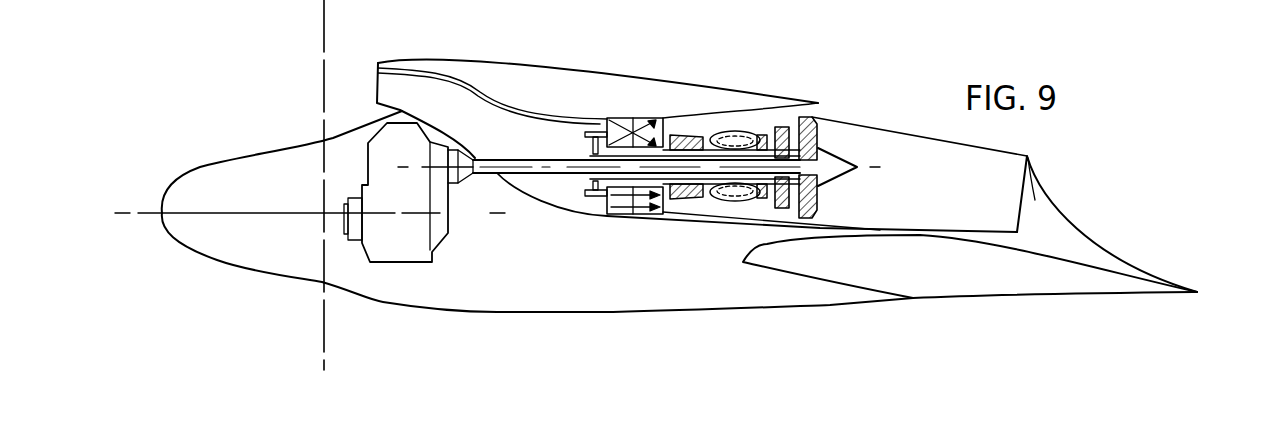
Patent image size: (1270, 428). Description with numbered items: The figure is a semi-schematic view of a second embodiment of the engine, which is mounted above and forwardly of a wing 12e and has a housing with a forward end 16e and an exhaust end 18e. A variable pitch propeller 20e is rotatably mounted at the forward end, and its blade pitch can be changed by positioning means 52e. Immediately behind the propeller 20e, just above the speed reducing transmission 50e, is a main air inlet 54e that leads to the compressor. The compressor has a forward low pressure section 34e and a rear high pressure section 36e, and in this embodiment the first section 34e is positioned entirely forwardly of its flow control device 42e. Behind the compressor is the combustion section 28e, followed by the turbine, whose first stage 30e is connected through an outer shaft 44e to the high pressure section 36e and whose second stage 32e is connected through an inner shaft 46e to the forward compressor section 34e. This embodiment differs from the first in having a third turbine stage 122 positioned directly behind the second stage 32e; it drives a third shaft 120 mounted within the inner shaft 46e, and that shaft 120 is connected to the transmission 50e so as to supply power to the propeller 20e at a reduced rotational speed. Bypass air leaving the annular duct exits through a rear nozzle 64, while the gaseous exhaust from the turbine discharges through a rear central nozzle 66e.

The wing 12e is at (987, 290).
The forward end 16e is at (378, 297).
The exhaust end 18e is at (1050, 217).
The variable pitch propeller 20e is at (323, 48).
The combustion section 28e is at (723, 137).
The turbine first stage 30e is at (762, 137).
The turbine second stage 32e is at (780, 132).
The forward low pressure compressor section 34e is at (580, 183).
The rear high pressure compressor section 36e is at (680, 196).
The flow control device 42e is at (617, 118).
The outer shaft 44e is at (717, 182).
The inner shaft 46e is at (740, 178).
The speed reducing transmission 50e is at (430, 258).
The positioning means 52e is at (265, 160).
The main air inlet 54e is at (378, 85).
The rear nozzle 64 is at (818, 105).
The rear central nozzle 66e is at (1033, 187).
The third shaft 120 is at (520, 158).
The third turbine stage 122 is at (820, 133).